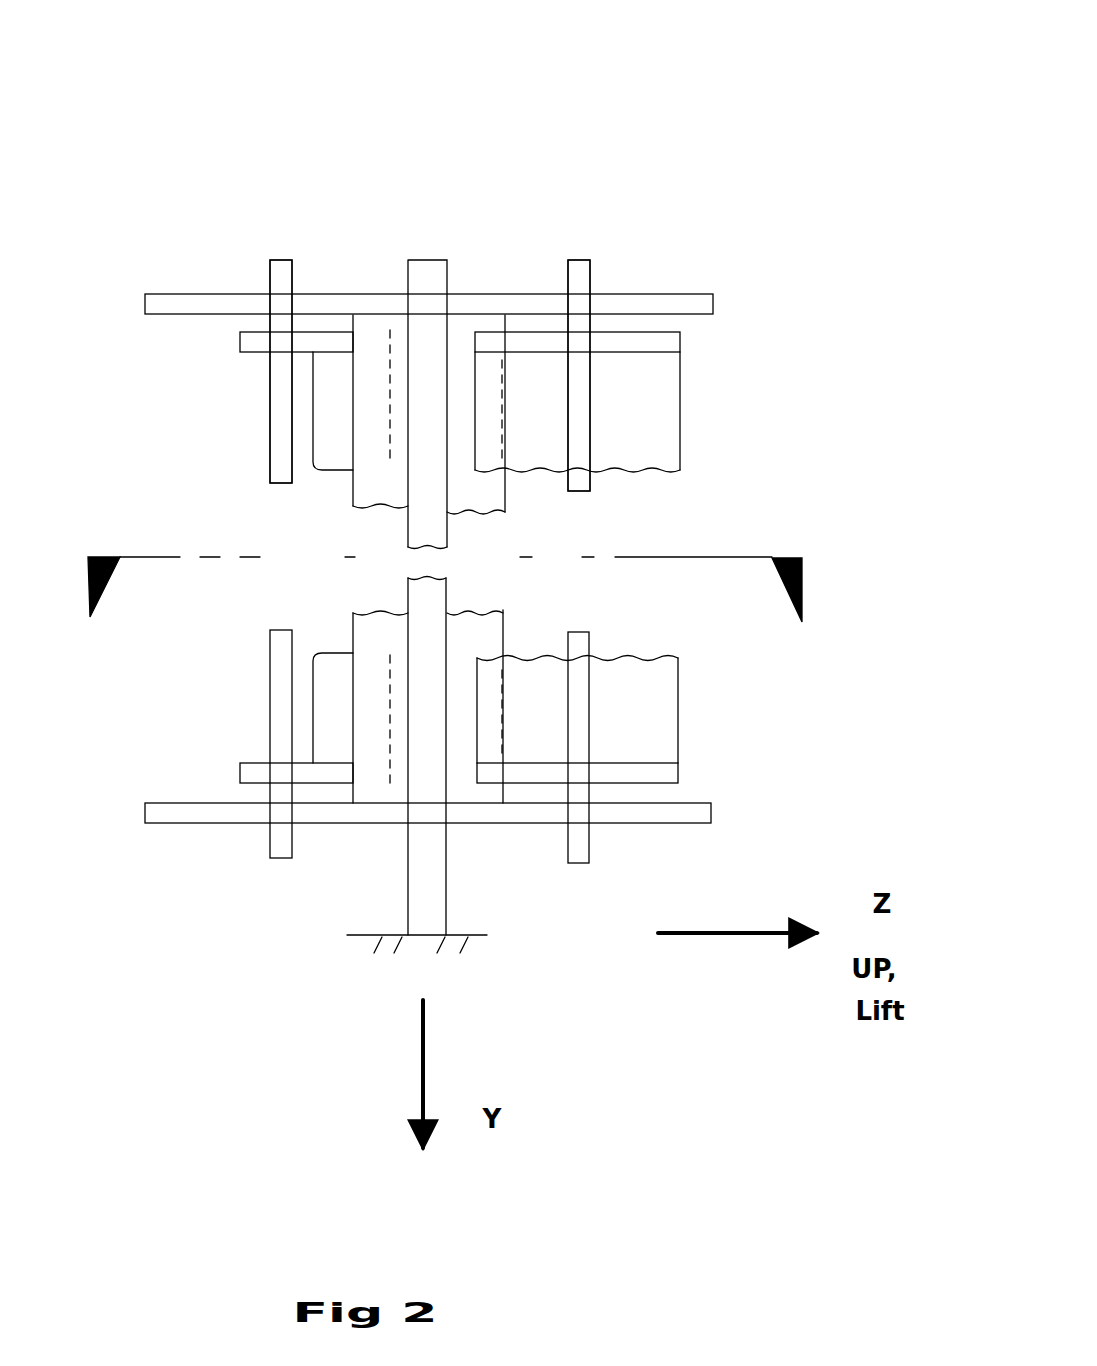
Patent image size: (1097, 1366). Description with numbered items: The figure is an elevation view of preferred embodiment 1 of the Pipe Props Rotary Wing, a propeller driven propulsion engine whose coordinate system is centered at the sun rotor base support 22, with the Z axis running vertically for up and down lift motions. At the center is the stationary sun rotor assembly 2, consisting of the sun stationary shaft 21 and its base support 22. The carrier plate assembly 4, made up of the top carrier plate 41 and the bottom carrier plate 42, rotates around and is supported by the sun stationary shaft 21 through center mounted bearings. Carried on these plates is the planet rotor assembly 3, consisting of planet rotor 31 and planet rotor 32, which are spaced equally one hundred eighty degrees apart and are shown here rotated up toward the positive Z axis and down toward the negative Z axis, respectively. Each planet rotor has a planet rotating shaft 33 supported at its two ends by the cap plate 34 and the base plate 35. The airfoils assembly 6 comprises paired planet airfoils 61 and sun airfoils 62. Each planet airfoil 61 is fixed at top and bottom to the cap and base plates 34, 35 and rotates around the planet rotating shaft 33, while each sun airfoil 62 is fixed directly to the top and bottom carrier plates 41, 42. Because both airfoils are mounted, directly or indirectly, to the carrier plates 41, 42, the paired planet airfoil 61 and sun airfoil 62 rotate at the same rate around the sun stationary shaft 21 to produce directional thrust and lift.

The preferred embodiment 1 is at (853, 87).
The sun rotor assembly 2 is at (840, 207).
The planet rotor assembly 3 is at (840, 207).
The carrier plate assembly 4 is at (840, 207).
The airfoils assembly 6 is at (907, 130).
The sun stationary shaft 21 is at (440, 262).
The sun rotor base support 22 is at (428, 935).
The planet rotor 31 is at (590, 262).
The planet rotor 32 is at (285, 262).
The planet rotating shaft 33 is at (432, 329).
The cap plate 34 is at (240, 352).
The base plate 35 is at (243, 765).
The top carrier plate 41 is at (190, 295).
The bottom carrier plate 42 is at (185, 820).
The planet airfoil 61 is at (327, 655).
The sun airfoil 62 is at (392, 503).